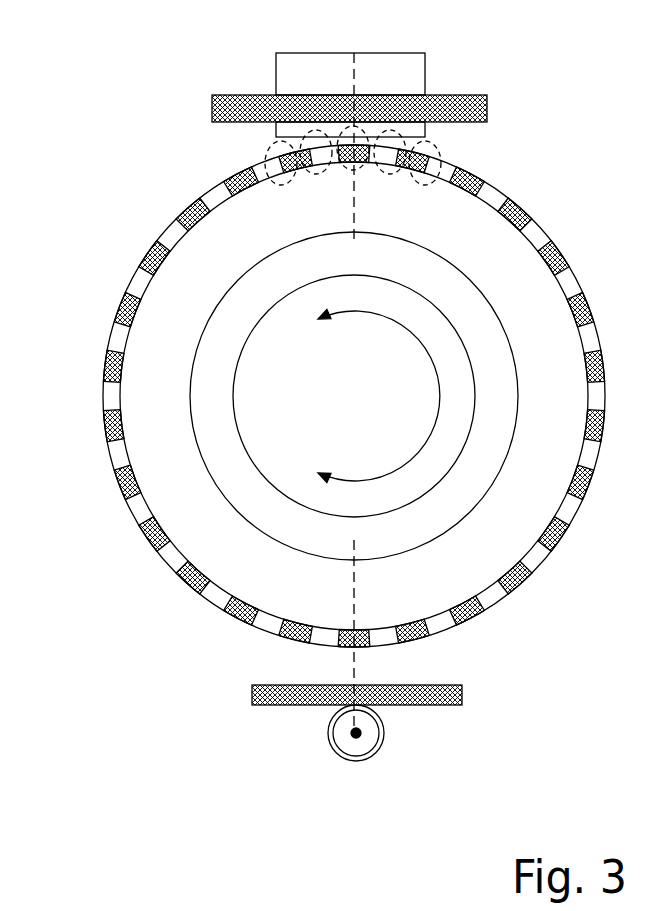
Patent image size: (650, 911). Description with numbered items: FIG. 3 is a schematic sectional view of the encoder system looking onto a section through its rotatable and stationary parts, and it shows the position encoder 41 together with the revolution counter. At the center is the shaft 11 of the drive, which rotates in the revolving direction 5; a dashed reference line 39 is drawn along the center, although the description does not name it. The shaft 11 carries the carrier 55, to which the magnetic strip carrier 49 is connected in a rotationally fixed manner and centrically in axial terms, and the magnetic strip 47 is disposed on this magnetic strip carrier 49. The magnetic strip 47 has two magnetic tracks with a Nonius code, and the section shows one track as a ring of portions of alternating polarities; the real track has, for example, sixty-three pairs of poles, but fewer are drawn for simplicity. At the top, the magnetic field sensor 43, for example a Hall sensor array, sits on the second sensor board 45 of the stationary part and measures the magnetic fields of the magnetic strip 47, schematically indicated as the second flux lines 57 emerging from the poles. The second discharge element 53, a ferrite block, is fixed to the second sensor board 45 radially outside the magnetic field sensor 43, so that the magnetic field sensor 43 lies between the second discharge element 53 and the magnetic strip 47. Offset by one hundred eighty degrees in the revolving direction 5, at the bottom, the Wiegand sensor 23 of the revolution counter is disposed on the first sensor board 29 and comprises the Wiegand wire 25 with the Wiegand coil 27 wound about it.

The revolving direction 5 is at (432, 357).
The shaft 11 is at (238, 358).
The Wiegand sensor 23 is at (317, 742).
The Wiegand wire 25 is at (362, 735).
The Wiegand coil 27 is at (370, 755).
The first sensor board 29 is at (463, 698).
The center axis 39 is at (352, 85).
The position encoder 41 is at (141, 108).
The magnetic field sensor 43 is at (425, 128).
The second sensor board 45 is at (487, 98).
The magnetic strip 47 is at (192, 207).
The magnetic strip carrier 49 is at (110, 342).
The second discharge element 53 is at (425, 67).
The carrier 55 is at (212, 305).
The second flux lines 57 is at (367, 127).